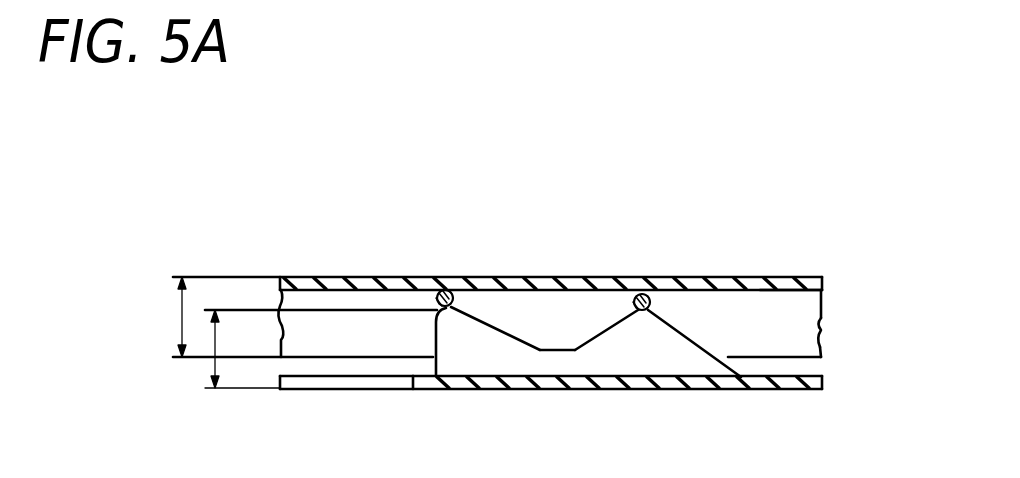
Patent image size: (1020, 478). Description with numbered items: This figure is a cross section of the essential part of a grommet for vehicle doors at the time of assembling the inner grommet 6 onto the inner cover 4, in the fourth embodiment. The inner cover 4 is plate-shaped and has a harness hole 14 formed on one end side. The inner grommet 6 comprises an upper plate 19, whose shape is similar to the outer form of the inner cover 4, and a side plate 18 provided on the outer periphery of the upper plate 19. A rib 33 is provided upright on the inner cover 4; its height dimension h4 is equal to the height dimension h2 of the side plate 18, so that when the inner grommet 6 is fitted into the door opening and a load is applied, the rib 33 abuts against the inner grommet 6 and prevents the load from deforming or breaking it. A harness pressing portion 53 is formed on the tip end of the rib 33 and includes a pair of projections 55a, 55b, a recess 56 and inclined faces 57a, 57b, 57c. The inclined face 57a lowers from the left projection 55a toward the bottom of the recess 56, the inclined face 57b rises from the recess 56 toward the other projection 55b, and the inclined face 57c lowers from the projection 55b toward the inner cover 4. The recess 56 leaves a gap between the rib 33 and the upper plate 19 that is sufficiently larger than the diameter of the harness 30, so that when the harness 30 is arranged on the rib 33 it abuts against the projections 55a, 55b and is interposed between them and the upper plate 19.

The inner cover 4 is at (787, 392).
The inner grommet 6 is at (758, 277).
The harness hole 14 is at (412, 382).
The side plate 18 is at (793, 327).
The upper plate 19 is at (793, 285).
The harness 30 is at (437, 296).
The rib 33 is at (434, 347).
The harness pressing portion 53 is at (545, 262).
The projection 55a is at (450, 291).
The projection 55b is at (651, 305).
The recess 56 is at (548, 348).
The inclined face 57a is at (488, 323).
The inclined face 57b is at (597, 336).
The inclined face 57c is at (690, 340).
The height dimension of the side plate h2 is at (207, 317).
The height dimension of the rib h4 is at (214, 345).